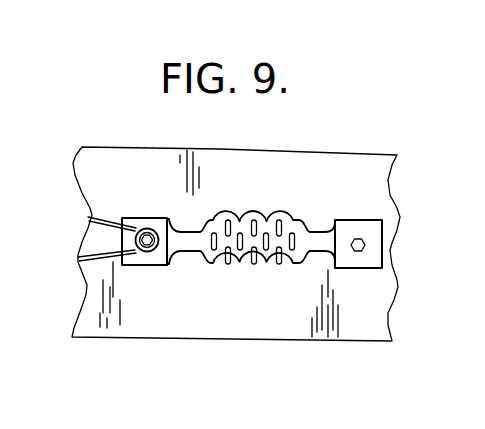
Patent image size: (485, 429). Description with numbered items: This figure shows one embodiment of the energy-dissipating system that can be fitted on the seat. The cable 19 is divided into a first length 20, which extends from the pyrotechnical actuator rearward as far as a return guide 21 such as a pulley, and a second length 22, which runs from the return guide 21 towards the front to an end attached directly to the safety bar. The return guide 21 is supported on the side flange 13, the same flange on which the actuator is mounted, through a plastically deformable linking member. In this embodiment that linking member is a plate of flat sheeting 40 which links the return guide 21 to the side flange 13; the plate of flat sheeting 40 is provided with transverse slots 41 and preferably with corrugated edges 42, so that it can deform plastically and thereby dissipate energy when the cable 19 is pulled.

The side flange 13 is at (345, 170).
The cable 19 is at (117, 221).
The first length 20 is at (90, 258).
The return guide 21 is at (147, 253).
The second length 22 is at (90, 215).
The plate of flat sheeting 40 is at (282, 283).
The transverse slots 41 is at (224, 228).
The corrugated edges 42 is at (245, 270).